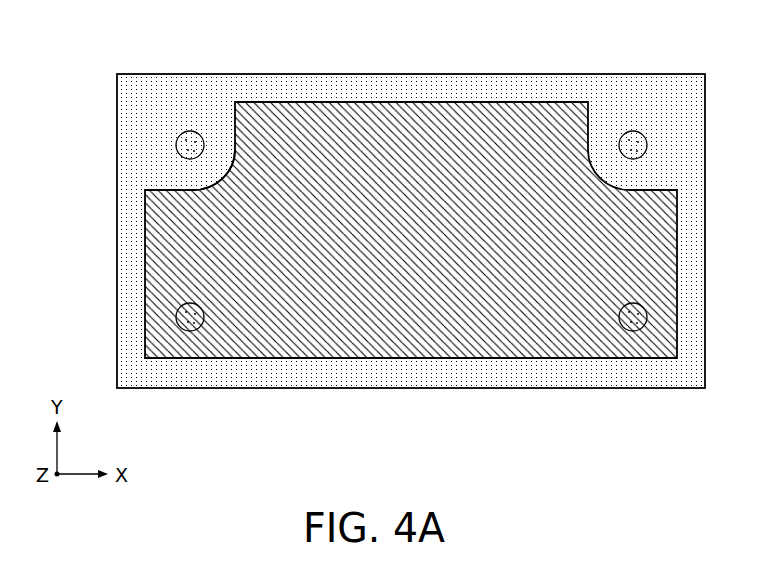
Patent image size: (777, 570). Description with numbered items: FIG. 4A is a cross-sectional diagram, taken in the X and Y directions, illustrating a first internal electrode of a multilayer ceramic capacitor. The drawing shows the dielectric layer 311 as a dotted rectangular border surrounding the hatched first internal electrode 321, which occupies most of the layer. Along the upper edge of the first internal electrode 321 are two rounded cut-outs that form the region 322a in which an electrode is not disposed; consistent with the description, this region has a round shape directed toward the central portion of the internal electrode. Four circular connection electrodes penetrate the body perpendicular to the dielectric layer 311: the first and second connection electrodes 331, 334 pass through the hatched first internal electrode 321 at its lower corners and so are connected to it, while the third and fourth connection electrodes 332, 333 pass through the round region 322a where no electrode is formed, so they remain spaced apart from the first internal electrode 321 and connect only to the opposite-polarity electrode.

The base layer 311 is at (408, 88).
The conductive layer 321 is at (502, 119).
The curved notch portion 322a is at (217, 137).
The first alignment hole 331 is at (183, 331).
The second alignment hole 332 is at (190, 131).
The third alignment hole 333 is at (637, 132).
The fourth alignment hole 334 is at (637, 331).